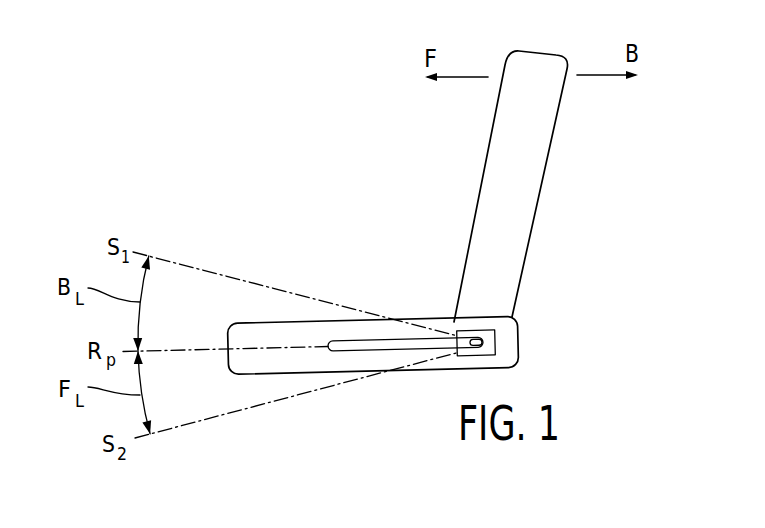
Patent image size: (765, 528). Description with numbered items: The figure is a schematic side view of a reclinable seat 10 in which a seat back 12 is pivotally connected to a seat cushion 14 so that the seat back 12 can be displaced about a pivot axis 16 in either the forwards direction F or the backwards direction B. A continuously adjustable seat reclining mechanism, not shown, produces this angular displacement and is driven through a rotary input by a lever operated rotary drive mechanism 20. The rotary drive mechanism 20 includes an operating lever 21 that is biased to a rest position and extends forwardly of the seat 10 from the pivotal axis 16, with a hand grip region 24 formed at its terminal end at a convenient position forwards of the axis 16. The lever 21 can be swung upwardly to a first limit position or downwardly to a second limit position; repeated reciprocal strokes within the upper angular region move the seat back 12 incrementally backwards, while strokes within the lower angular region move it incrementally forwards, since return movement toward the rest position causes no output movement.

The reclinable seat 10 is at (318, 127).
The seat back 12 is at (520, 193).
The seat cushion 14 is at (307, 363).
The pivot axis 16 is at (490, 342).
The lever operated rotary drive mechanism 20 is at (474, 316).
The operating lever 21 is at (365, 351).
The hand grip region 24 is at (362, 326).